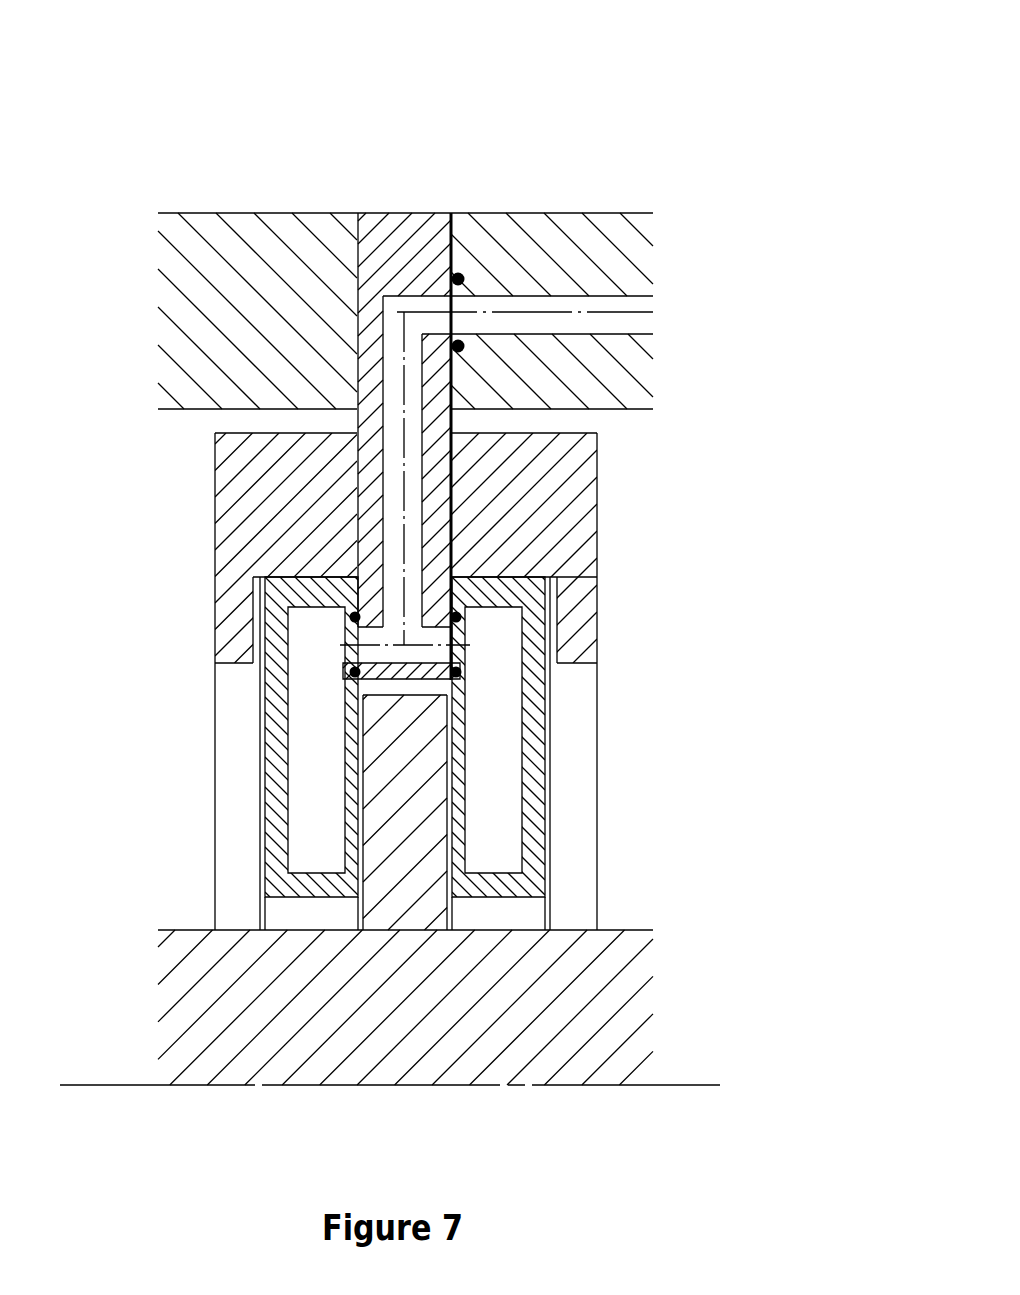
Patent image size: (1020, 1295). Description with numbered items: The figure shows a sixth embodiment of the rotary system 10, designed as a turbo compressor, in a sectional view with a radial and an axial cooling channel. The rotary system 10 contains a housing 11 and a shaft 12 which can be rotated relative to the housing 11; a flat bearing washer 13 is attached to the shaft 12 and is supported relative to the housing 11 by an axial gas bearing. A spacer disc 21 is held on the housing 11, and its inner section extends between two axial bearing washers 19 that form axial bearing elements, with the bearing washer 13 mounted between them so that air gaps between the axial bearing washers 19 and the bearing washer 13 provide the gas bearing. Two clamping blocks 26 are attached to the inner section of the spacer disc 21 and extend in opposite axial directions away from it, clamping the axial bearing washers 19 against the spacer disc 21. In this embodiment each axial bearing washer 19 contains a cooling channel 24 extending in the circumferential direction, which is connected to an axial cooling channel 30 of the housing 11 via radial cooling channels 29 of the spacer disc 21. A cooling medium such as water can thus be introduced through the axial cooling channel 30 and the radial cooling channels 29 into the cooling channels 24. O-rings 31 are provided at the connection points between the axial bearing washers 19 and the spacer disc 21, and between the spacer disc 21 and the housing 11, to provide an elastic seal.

The rotary system 10 is at (703, 58).
The housing 11 is at (622, 212).
The shaft 12 is at (587, 1087).
The bearing washer 13 is at (410, 845).
The axial bearing washers 19 is at (273, 820).
The spacer disc 21 is at (388, 250).
The cooling channel 24 is at (303, 747).
The clamping blocks 26 is at (233, 520).
The radial cooling channels 29 is at (395, 336).
The axial cooling channel 30 is at (640, 296).
The O-rings 31 is at (463, 345).